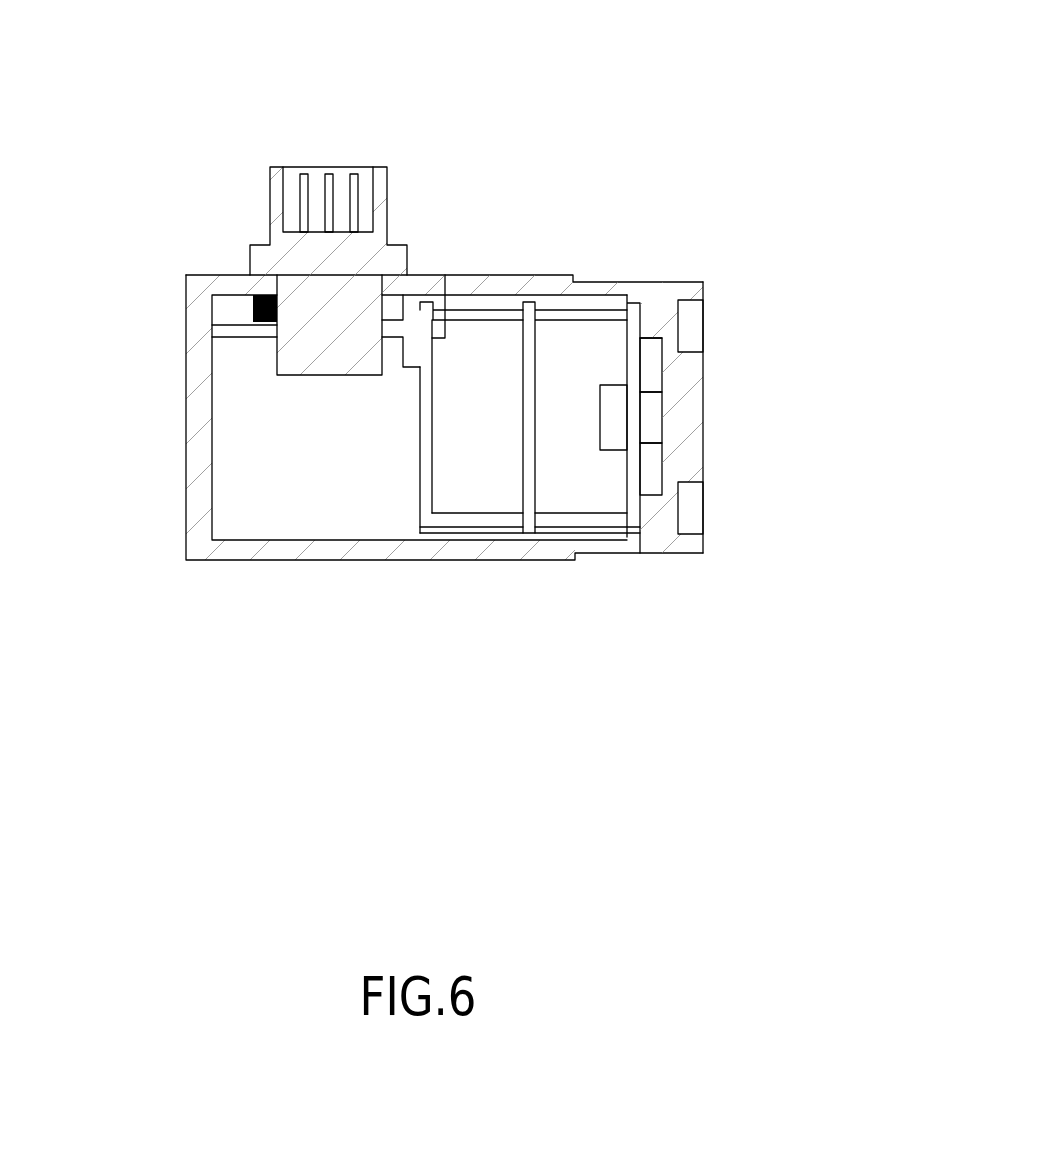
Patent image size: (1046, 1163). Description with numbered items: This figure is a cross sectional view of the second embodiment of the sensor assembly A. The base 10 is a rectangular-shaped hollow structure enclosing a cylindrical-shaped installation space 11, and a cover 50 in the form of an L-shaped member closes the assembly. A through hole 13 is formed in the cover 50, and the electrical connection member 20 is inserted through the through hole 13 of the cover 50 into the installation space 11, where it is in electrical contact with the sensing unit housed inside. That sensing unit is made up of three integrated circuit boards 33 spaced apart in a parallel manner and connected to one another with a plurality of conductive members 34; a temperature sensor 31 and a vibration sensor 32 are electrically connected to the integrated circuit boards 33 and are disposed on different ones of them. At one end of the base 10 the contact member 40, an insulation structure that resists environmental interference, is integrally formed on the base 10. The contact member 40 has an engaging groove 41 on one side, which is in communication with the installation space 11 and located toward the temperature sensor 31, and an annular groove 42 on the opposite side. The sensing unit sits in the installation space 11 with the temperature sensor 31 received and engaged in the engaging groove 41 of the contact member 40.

The sensor assembly A is at (122, 143).
The base 10 is at (523, 263).
The installation space 11 is at (313, 523).
The through hole 13 is at (382, 285).
The electrical connection member 20 is at (396, 178).
The temperature sensor 31 is at (653, 427).
The vibration sensor 32 is at (615, 425).
The integrated circuit board 33 is at (423, 453).
The conductive member 34 is at (563, 520).
The contact member 40 is at (659, 270).
The engaging groove 41 is at (648, 353).
The annular groove 42 is at (684, 302).
The cover 50 is at (187, 266).